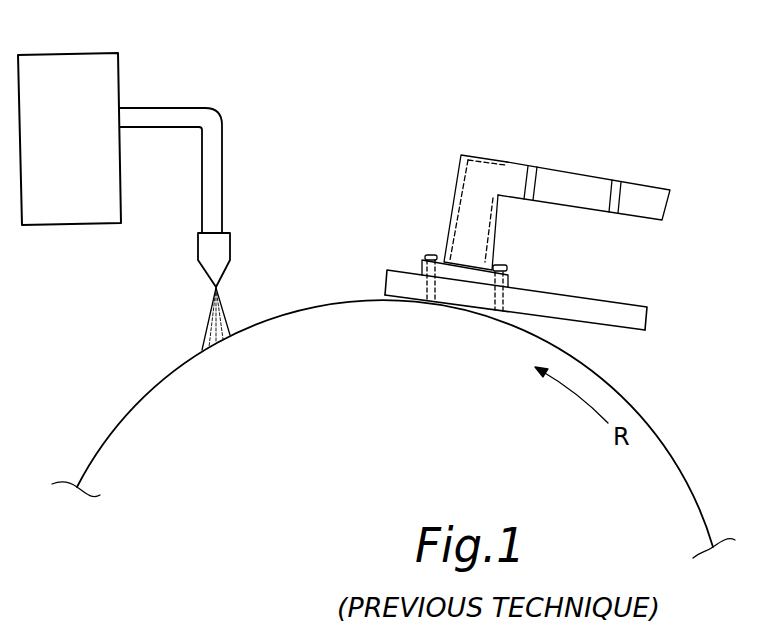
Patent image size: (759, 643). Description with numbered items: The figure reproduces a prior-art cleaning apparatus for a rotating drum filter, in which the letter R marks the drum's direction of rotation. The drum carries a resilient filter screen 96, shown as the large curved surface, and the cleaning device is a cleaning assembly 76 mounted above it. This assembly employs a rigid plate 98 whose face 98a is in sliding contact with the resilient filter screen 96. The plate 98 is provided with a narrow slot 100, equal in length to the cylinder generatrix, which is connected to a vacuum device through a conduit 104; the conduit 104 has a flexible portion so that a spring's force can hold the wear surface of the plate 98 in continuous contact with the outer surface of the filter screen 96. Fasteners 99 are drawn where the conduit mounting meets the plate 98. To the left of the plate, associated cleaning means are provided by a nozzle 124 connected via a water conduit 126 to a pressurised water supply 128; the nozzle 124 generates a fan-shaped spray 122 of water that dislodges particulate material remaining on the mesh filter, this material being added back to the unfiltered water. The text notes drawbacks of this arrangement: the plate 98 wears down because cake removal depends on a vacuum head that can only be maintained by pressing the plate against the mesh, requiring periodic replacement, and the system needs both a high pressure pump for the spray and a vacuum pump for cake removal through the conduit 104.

The applicator assembly 76 is at (457, 106).
The resilient filter screen 96 is at (665, 440).
The rigid plate 98 is at (627, 302).
The face of the rigid plate 98a is at (575, 331).
The bolts 99 is at (430, 256).
The narrow slot 100 is at (460, 298).
The conduit 104 is at (575, 188).
The spray 122 is at (203, 323).
The nozzle 124 is at (232, 243).
The water conduit 126 is at (165, 108).
The supply source 128 is at (89, 163).